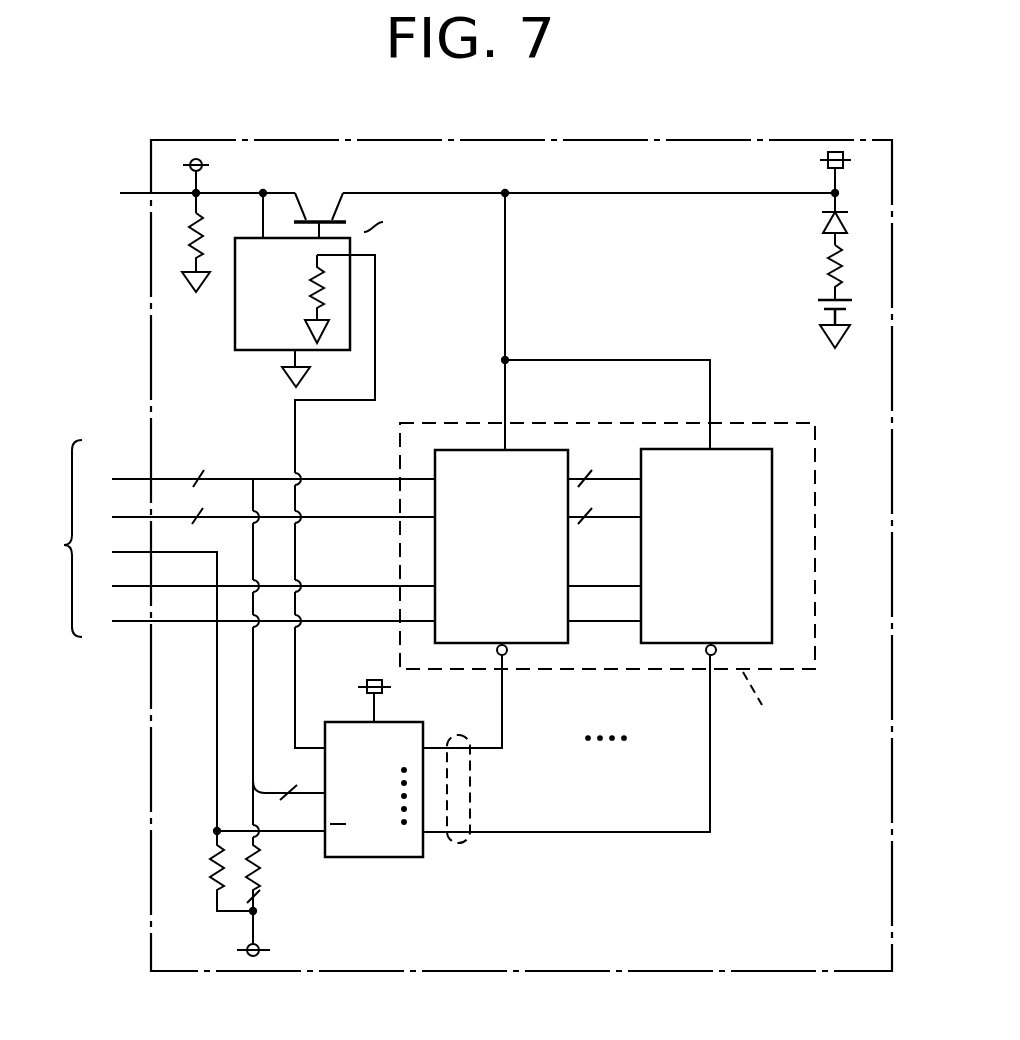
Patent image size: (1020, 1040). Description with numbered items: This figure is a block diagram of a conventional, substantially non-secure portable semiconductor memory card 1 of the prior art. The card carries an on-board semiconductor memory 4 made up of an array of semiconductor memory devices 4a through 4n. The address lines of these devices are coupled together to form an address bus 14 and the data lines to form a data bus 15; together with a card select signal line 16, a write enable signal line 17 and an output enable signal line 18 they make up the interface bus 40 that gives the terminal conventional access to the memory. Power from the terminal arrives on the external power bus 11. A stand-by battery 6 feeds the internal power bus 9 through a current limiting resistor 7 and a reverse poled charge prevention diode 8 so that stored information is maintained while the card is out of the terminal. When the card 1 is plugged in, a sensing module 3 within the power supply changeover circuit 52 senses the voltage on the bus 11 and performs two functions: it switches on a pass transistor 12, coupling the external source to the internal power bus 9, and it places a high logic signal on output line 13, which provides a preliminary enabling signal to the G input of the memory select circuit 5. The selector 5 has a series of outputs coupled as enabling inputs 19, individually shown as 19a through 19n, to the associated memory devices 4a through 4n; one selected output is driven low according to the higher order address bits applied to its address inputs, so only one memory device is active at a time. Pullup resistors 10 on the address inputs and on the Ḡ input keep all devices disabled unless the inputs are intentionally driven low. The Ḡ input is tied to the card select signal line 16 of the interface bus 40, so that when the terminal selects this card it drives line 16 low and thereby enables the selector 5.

The portable semiconductor memory card 1 is at (380, 140).
The sensing module 3 is at (235, 322).
The semiconductor memory 4 is at (600, 420).
The semiconductor memory device 4a is at (545, 450).
The semiconductor memory device 4n is at (725, 449).
The memory select circuit 5 is at (366, 858).
The stand-by battery 6 is at (815, 310).
The current limiting resistor 7 is at (825, 272).
The reverse poled charge prevention diode 8 is at (823, 228).
The internal power bus 9 is at (660, 193).
The pullup resistors 10 is at (210, 868).
The external power bus 11 is at (135, 193).
The pass transistor 12 is at (312, 218).
The output line 13 is at (378, 368).
The address bus 14 is at (128, 479).
The data bus 15 is at (128, 517).
The card select signal line 16 is at (128, 552).
The write enable signal line 17 is at (128, 586).
The output enable signal line 18 is at (128, 621).
The enabling inputs 19 is at (472, 788).
The enabling input 19a is at (503, 705).
The enabling input 19n is at (708, 713).
The interface bus 40 is at (55, 538).
The power supply changeover circuit 52 is at (364, 193).